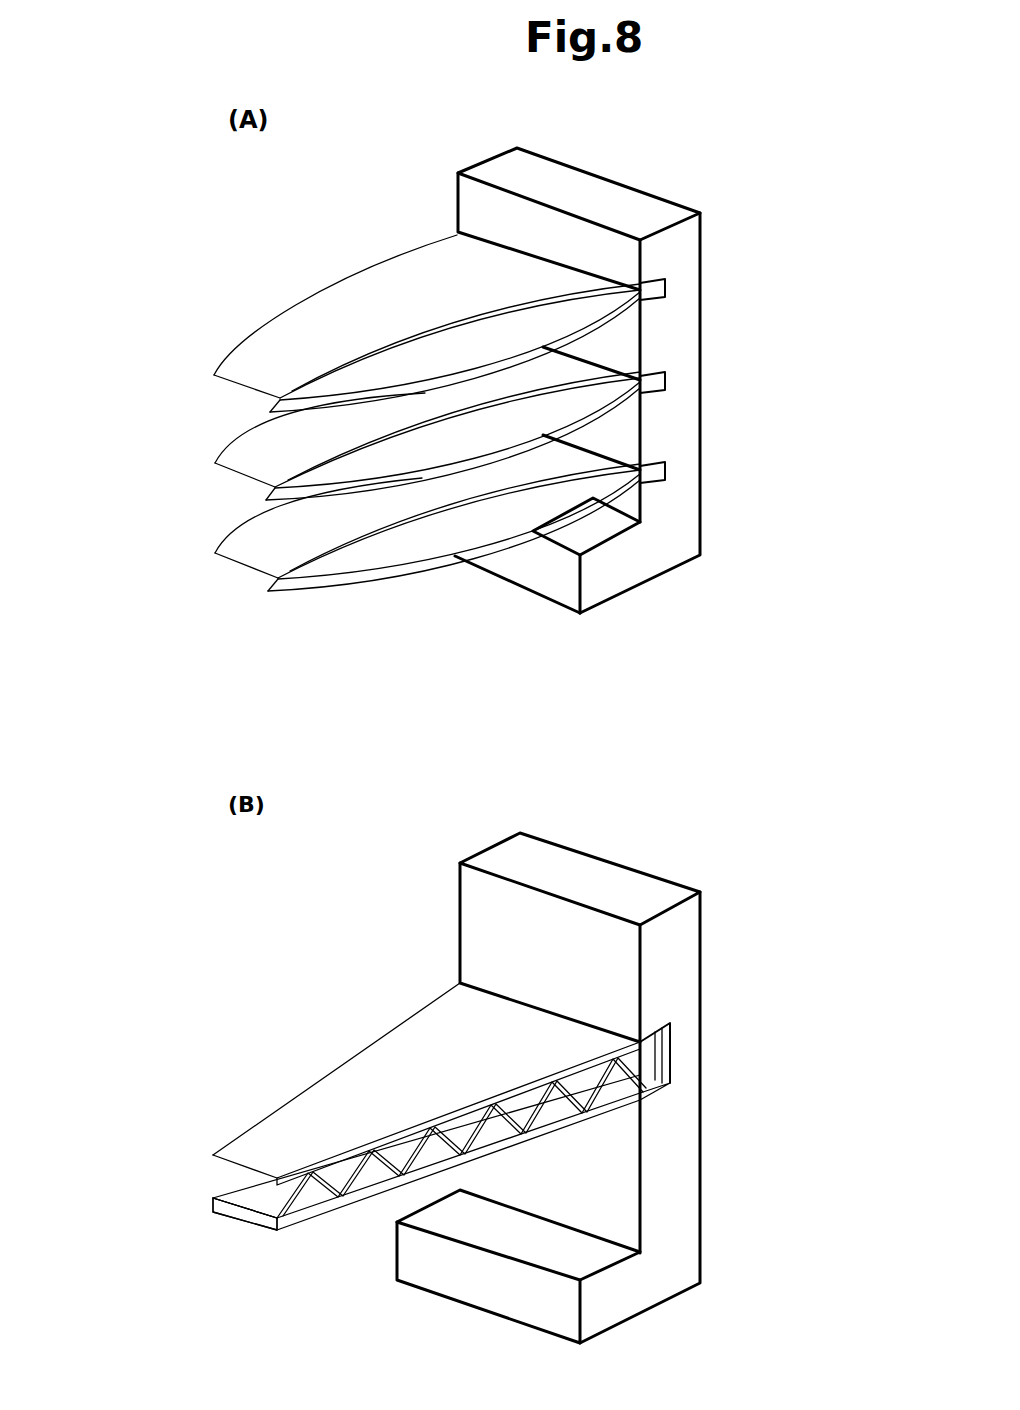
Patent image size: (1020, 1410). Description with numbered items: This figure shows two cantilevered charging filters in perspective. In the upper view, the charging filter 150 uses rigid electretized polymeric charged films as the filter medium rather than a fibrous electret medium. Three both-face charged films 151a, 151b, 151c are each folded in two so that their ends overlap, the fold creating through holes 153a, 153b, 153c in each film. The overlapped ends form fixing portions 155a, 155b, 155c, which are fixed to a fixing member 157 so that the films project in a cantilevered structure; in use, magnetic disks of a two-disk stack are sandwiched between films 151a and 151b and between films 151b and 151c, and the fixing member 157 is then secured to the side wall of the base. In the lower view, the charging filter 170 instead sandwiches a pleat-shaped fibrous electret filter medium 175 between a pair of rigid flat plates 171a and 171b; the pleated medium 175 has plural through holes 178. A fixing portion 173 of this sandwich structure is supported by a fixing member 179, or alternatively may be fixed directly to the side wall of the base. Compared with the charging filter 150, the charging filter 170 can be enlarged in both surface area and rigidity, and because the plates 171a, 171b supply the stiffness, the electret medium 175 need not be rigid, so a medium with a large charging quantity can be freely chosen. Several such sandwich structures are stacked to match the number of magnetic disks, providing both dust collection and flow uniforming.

The charging filter 150 is at (293, 286).
The charged film 151a is at (430, 277).
The charged film 151b is at (345, 436).
The charged film 151c is at (340, 528).
The through hole 153a is at (270, 412).
The through hole 153b is at (266, 500).
The through hole 153c is at (458, 540).
The fixing portion 155a is at (665, 280).
The fixing portion 155b is at (670, 378).
The fixing portion 155c is at (667, 470).
The fixing member 157 is at (590, 535).
The charging filter 170 is at (396, 1000).
The flat plate 171a is at (405, 1078).
The flat plate 171b is at (405, 1200).
The fixing portion 173 is at (672, 1022).
The fibrous electret filter medium 175 is at (262, 1190).
The through hole 178 is at (312, 1190).
The fixing member 179 is at (600, 1252).